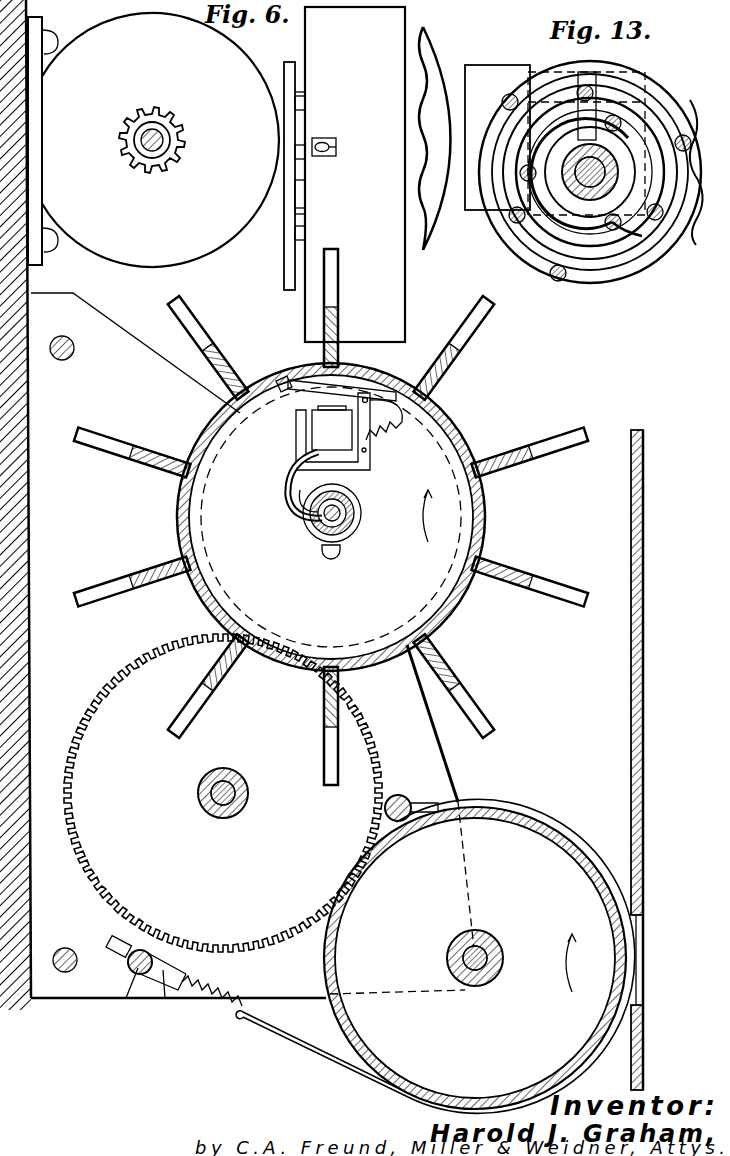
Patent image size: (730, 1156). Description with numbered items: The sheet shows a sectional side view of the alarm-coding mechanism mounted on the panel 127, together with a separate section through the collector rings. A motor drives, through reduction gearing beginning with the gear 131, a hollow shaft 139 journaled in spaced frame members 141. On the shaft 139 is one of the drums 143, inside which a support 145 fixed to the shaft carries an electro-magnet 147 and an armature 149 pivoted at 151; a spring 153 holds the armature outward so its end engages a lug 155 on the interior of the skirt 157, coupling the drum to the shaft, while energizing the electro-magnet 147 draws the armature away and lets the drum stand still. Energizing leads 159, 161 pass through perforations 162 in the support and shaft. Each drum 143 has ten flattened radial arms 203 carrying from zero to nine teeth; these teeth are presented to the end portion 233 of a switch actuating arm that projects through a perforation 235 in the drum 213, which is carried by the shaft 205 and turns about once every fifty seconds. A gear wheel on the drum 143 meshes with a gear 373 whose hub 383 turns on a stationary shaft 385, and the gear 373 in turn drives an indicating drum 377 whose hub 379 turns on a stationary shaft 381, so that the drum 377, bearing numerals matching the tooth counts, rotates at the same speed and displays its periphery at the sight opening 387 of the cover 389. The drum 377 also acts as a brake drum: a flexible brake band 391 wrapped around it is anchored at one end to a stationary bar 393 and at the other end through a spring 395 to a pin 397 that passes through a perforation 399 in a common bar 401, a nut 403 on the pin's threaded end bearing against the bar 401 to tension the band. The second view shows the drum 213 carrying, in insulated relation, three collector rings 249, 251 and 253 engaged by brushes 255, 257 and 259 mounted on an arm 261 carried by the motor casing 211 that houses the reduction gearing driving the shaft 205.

In FIG. 6, the gear 131 is at (158, 110).
In FIG. 6, the drum 213 is at (305, 38).
In FIG. 6, the collector ring 249 is at (288, 238).
In FIG. 13, the collector ring 249 is at (540, 268).
In FIG. 6, the perforation 235 is at (325, 137).
In FIG. 6, the end portion 233 is at (337, 149).
In FIG. 6, the drum 143 is at (186, 516).
In FIG. 6, the skirt 157 is at (192, 530).
In FIG. 6, the arms 203 is at (132, 455).
In FIG. 6, the armature 149 is at (310, 396).
In FIG. 6, the lug 155 is at (284, 380).
In FIG. 6, the pivot 151 is at (372, 390).
In FIG. 6, the support 145 is at (370, 483).
In FIG. 6, the electro-magnet 147 is at (322, 432).
In FIG. 6, the spring 153 is at (392, 442).
In FIG. 6, the energizing lead 159 is at (300, 472).
In FIG. 6, the energizing lead 161 is at (296, 500).
In FIG. 6, the hollow shaft 139 is at (356, 528).
In FIG. 6, the perforations 162 is at (312, 540).
In FIG. 6, the panel 127 is at (32, 645).
In FIG. 6, the gear 373 is at (118, 696).
In FIG. 6, the hub 383 is at (248, 800).
In FIG. 6, the stationary shaft 385 is at (212, 798).
In FIG. 6, the frame members 141 is at (455, 782).
In FIG. 6, the stationary bar 393 is at (401, 795).
In FIG. 6, the drum 377 is at (523, 810).
In FIG. 6, the hub 379 is at (458, 945).
In FIG. 6, the stationary shaft 381 is at (462, 958).
In FIG. 6, the cover 389 is at (645, 782).
In FIG. 6, the sight opening 387 is at (638, 942).
In FIG. 6, the brake band 391 is at (312, 1051).
In FIG. 6, the spring 395 is at (214, 1014).
In FIG. 6, the pin 397 is at (166, 990).
In FIG. 6, the perforation 399 is at (128, 985).
In FIG. 6, the bar 401 is at (153, 960).
In FIG. 6, the nut 403 is at (118, 944).
In FIG. 13, the casing 211 is at (503, 58).
In FIG. 13, the arm 261 is at (658, 120).
In FIG. 13, the brush 257 is at (652, 104).
In FIG. 13, the collector ring 253 is at (556, 222).
In FIG. 13, the collector ring 251 is at (586, 256).
In FIG. 13, the brush 255 is at (694, 226).
In FIG. 13, the brush 259 is at (640, 228).
In FIG. 13, the shaft 205 is at (605, 205).